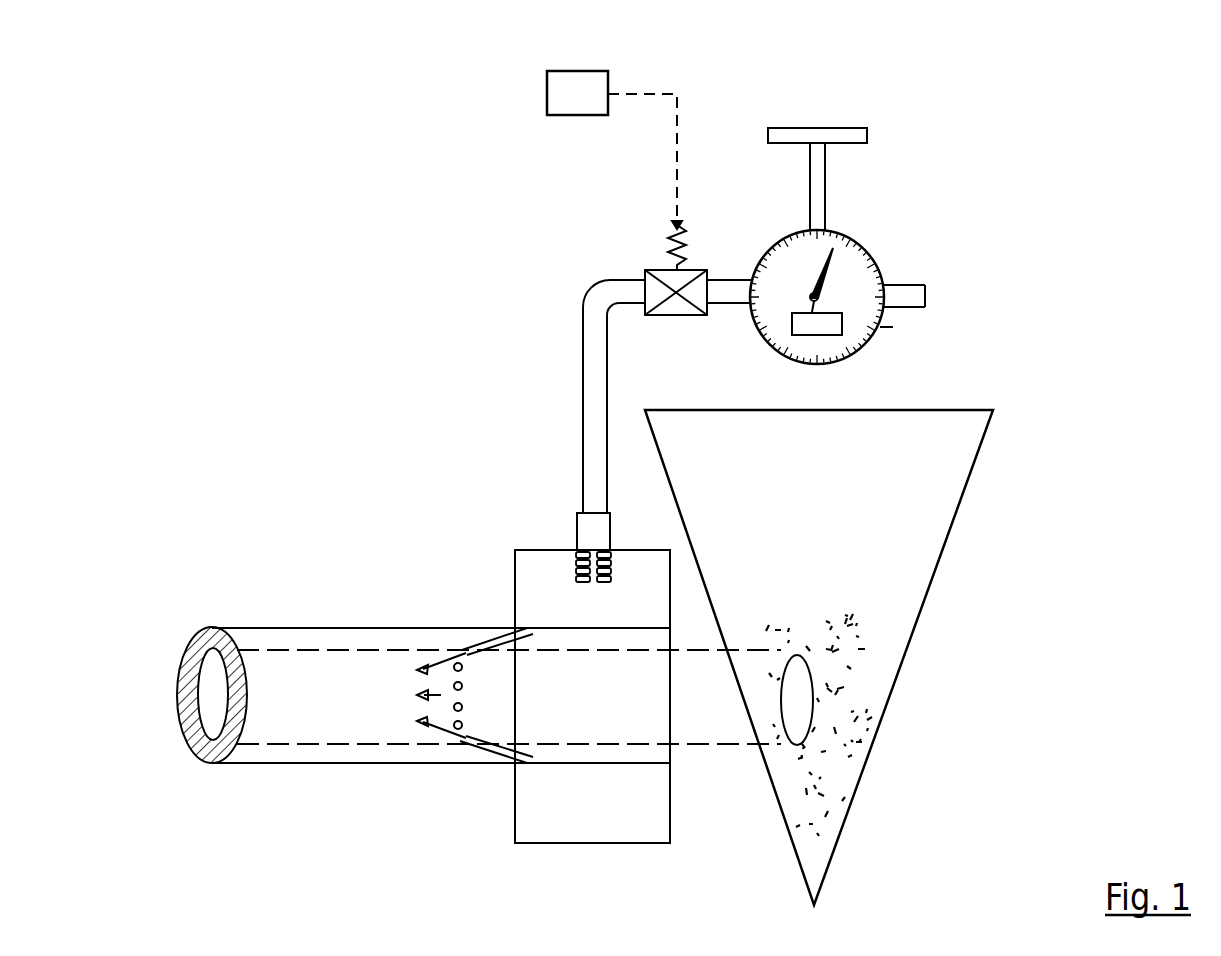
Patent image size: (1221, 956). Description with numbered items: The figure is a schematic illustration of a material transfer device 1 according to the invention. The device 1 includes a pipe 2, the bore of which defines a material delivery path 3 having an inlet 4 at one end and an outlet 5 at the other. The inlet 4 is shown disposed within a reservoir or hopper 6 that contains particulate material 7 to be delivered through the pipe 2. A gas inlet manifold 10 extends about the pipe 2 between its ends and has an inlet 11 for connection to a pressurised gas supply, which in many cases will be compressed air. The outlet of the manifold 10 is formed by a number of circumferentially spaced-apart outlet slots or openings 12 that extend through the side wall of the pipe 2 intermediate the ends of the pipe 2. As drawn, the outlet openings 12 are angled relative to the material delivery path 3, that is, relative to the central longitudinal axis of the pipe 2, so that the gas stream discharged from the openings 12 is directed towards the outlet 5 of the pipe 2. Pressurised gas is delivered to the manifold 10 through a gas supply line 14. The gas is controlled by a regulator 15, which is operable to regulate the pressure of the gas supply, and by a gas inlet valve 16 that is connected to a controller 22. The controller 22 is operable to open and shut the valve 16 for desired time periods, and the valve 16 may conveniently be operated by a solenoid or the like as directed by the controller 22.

The material transfer device 1 is at (493, 198).
The pipe 2 is at (313, 627).
The material delivery path 3 is at (338, 743).
The inlet 4 is at (813, 703).
The outlet 5 is at (198, 677).
The hopper 6 is at (968, 493).
The particulate material 7 is at (855, 648).
The gas inlet manifold 10 is at (588, 832).
The inlet 11 is at (588, 532).
The outlet openings 12 is at (467, 645).
The gas supply line 14 is at (594, 302).
The regulator 15 is at (848, 235).
The gas inlet valve 16 is at (690, 272).
The controller 22 is at (622, 63).